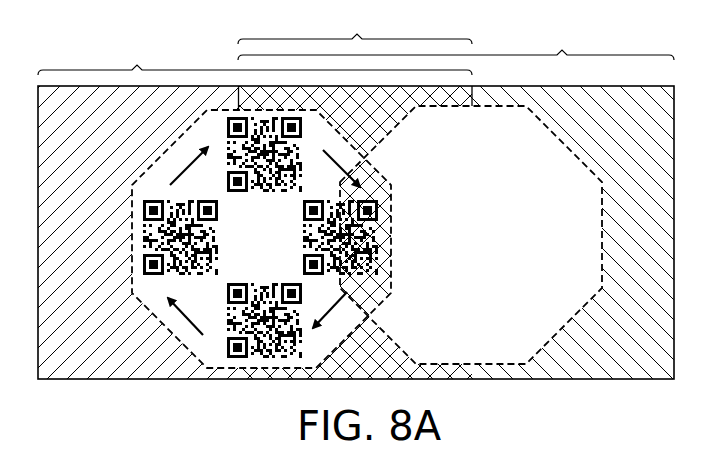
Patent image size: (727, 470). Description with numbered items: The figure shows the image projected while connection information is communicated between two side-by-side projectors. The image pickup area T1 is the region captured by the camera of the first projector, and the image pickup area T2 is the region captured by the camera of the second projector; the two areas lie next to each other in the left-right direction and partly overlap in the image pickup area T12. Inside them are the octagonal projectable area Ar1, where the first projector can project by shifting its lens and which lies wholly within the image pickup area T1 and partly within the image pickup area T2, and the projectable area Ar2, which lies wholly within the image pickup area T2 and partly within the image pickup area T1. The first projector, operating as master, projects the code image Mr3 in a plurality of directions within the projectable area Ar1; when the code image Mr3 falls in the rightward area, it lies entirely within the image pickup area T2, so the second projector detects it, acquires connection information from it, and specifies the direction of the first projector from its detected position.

The image pickup area T1 is at (255, 57).
The image pickup area T2 is at (456, 43).
The image pickup area T12 is at (355, 26).
The projectable area Ar1 is at (183, 145).
The projectable area Ar2 is at (564, 143).
The code image Mr3 is at (368, 200).